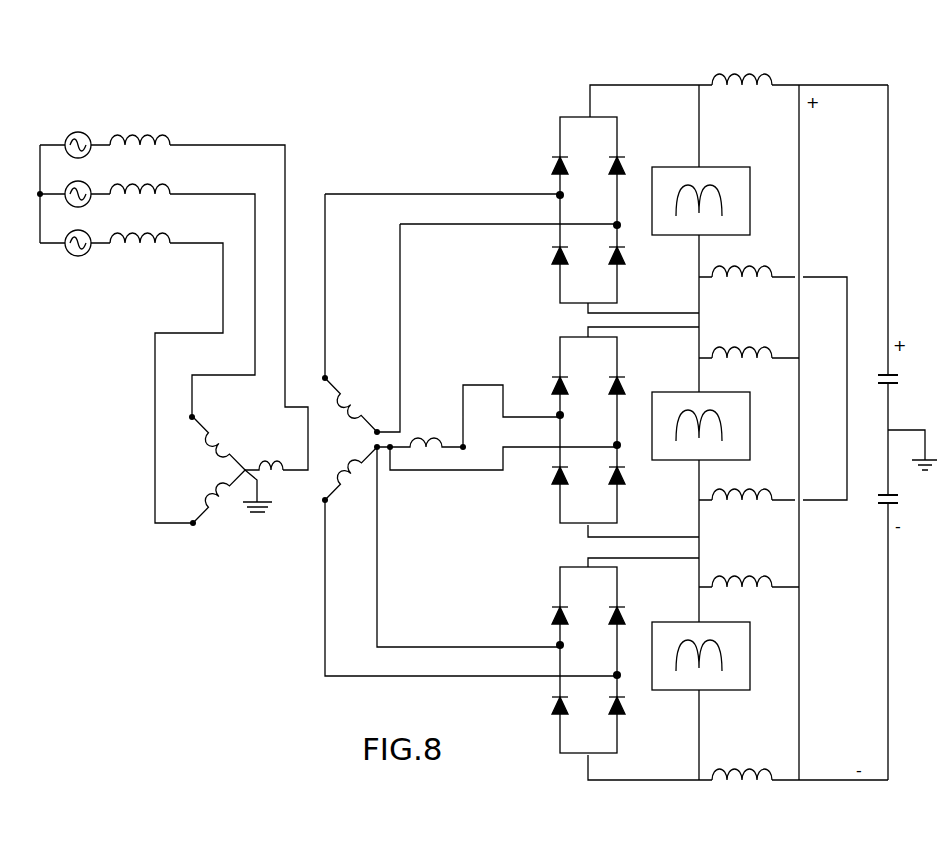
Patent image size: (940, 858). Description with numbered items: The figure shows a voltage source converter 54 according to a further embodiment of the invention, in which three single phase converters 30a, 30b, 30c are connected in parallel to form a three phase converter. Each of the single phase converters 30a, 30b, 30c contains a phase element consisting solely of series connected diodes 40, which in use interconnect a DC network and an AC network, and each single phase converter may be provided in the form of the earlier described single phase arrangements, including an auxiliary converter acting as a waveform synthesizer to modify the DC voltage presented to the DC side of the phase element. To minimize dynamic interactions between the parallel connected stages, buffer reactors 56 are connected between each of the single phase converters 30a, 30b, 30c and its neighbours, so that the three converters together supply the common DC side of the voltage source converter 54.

The voltage source converter 54 is at (113, 105).
The diodes 40 is at (610, 164).
The single phase converter 30a is at (640, 106).
The single phase converter 30b is at (679, 361).
The single phase converter 30c is at (650, 761).
The buffer reactors 56 is at (760, 73).